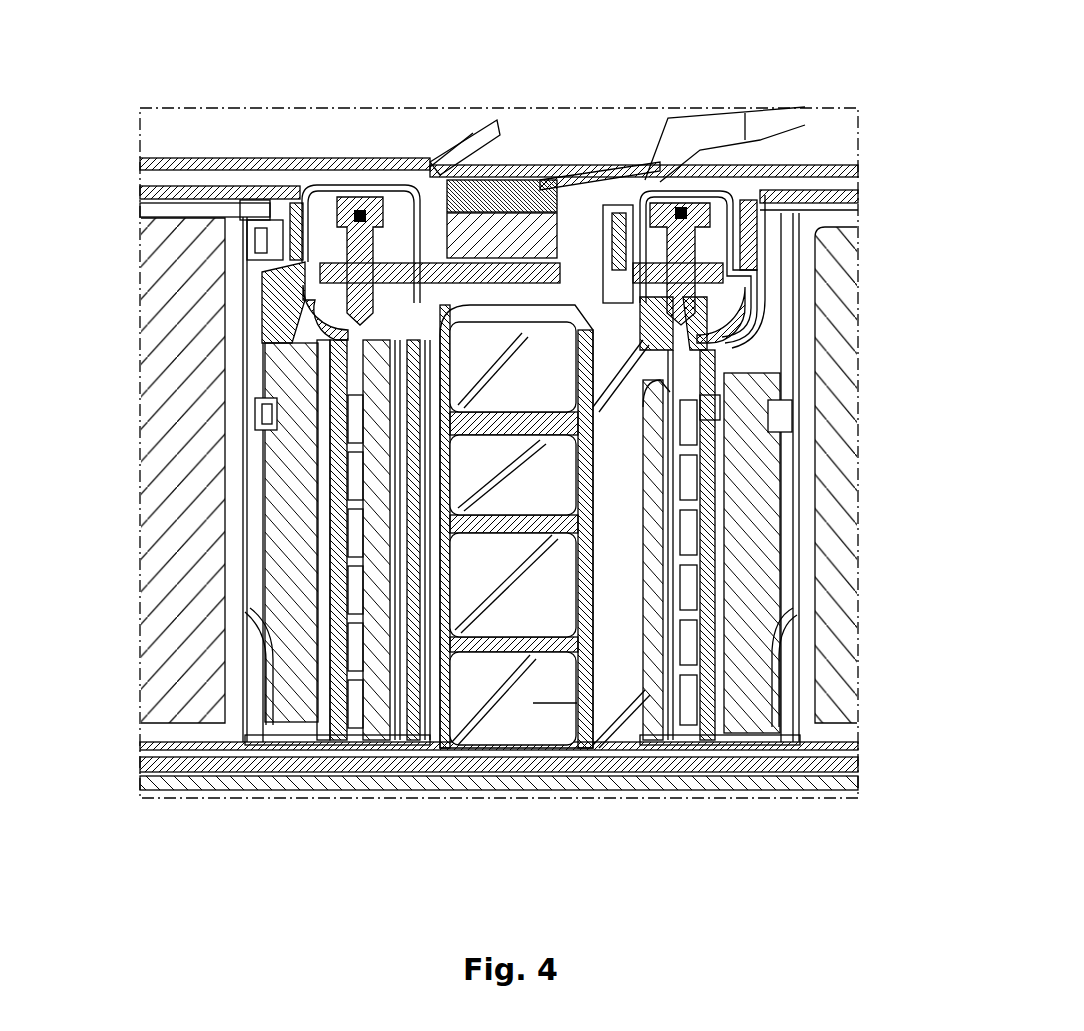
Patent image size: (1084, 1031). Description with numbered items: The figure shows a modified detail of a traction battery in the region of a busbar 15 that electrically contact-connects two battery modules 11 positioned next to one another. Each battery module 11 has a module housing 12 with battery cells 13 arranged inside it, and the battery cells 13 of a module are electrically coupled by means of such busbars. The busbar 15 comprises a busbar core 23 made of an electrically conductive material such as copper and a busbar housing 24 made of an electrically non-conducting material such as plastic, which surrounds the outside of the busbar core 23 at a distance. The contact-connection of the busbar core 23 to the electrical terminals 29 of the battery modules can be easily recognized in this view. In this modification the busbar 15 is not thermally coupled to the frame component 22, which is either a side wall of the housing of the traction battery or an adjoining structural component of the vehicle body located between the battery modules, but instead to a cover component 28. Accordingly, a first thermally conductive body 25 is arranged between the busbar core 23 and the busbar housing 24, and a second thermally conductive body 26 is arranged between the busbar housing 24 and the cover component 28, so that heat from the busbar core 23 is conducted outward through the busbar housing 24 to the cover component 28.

The battery module 11 is at (236, 762).
The module housing 12 is at (190, 172).
The battery cells 13 is at (192, 493).
The busbar 15 is at (598, 158).
The frame component 22 is at (553, 762).
The busbar core 23 is at (440, 240).
The busbar housing 24 is at (567, 176).
The first thermally conductive body 25 is at (470, 258).
The second thermally conductive body 26 is at (512, 182).
The cover component 28 is at (298, 104).
The electrical terminals 29 is at (362, 341).